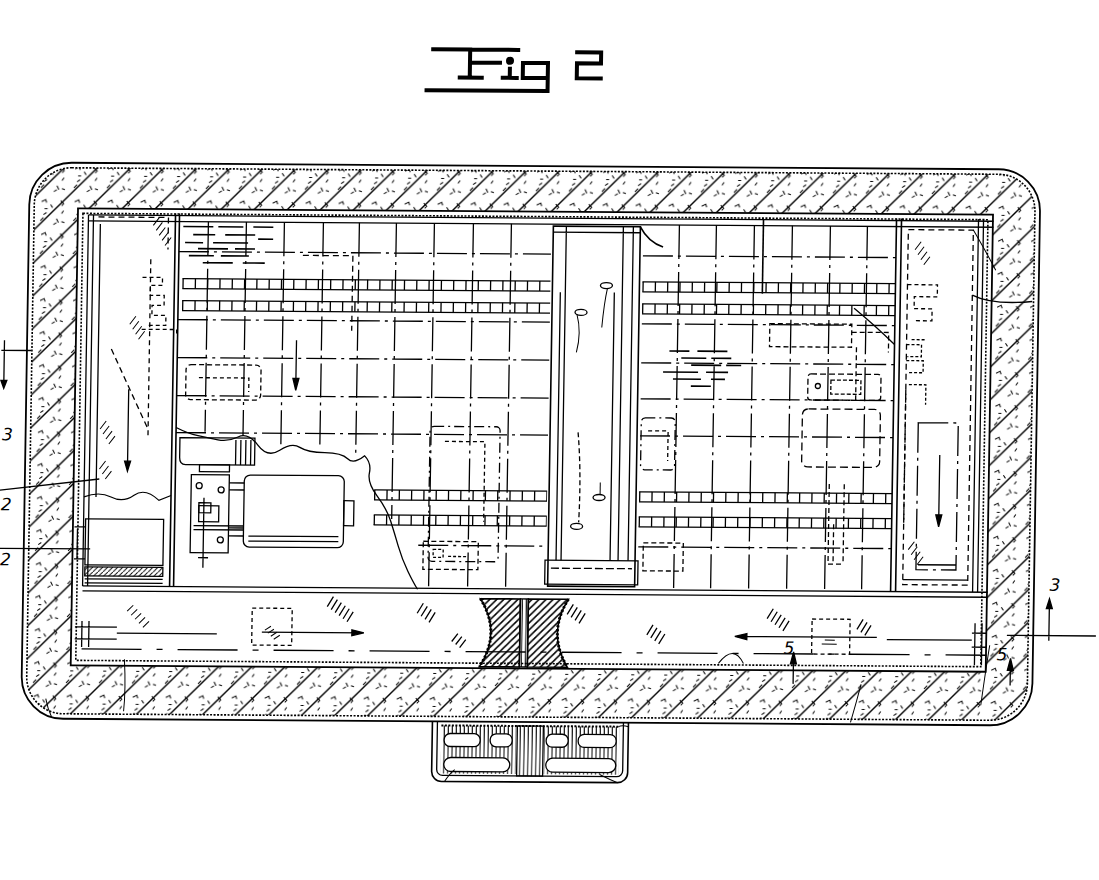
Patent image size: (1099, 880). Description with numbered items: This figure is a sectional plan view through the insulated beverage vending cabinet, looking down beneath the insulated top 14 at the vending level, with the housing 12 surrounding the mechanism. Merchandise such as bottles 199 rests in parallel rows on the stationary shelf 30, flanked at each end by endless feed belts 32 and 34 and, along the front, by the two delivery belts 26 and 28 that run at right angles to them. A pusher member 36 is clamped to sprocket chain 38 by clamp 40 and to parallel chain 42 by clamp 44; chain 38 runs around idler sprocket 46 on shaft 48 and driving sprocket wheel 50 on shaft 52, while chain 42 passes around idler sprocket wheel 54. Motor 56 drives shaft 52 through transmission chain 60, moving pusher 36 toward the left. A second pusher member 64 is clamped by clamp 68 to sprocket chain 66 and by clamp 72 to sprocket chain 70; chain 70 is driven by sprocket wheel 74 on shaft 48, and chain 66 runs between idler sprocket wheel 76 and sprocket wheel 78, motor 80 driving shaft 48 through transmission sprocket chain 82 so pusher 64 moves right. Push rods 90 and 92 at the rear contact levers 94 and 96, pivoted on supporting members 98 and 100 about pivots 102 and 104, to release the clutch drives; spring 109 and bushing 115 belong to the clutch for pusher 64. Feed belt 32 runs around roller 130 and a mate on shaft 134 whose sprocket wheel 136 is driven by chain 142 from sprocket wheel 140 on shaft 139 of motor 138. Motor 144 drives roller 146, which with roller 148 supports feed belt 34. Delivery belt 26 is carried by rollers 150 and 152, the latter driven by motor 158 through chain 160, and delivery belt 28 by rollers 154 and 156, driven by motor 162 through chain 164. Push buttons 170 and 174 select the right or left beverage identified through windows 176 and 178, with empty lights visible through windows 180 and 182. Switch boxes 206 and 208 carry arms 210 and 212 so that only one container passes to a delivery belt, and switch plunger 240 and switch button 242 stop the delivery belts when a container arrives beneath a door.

The insulated housing 12 is at (1015, 395).
The insulated top 14 is at (307, 368).
The delivery belt 26 is at (288, 662).
The delivery belt 28 is at (750, 670).
The stationary shelf 30 is at (482, 212).
The feed belt 32 is at (170, 582).
The feed belt 34 is at (1032, 259).
The pusher member 36 is at (590, 226).
The sprocket chain 38 is at (502, 313).
The clamp 40 is at (575, 354).
The sprocket chain 42 is at (520, 491).
The clamp 44 is at (576, 465).
The idler sprocket 46 is at (925, 316).
The shaft 48 is at (925, 406).
The driving sprocket wheel 50 is at (136, 314).
The shaft 52 is at (124, 403).
The idler sprocket wheel 54 is at (975, 537).
The motor 56 is at (262, 460).
The transmission chain 60 is at (215, 367).
The second pusher member 64 is at (645, 236).
The sprocket chain 66 is at (665, 284).
The clamp 68 is at (608, 315).
The sprocket chain 70 is at (665, 493).
The clamp 72 is at (593, 493).
The driving sprocket wheel 74 is at (905, 522).
The idler sprocket wheel 76 is at (148, 280).
The sprocket wheel 78 is at (930, 282).
The motor 80 is at (802, 457).
The transmission sprocket chain 82 is at (893, 354).
The push rod 90 is at (322, 217).
The push rod 92 is at (760, 217).
The lever 94 is at (300, 347).
The lever 96 is at (806, 348).
The supporting member 98 is at (178, 214).
The supporting member 100 is at (896, 217).
The pivot 102 is at (175, 340).
The pivot 104 is at (864, 317).
The spring 109 is at (922, 342).
The bushing 115 is at (922, 364).
The roller 130 is at (115, 228).
The shaft 134 is at (192, 562).
The sprocket wheel 136 is at (212, 562).
The motor 138 is at (341, 550).
The shaft 139 is at (222, 504).
The sprocket wheel 140 is at (190, 512).
The sprocket chain 142 is at (232, 530).
The motor 144 is at (830, 562).
The roller 146 is at (977, 545).
The roller 148 is at (982, 207).
The roller 150 is at (134, 714).
The roller 152 is at (462, 650).
The roller 154 is at (872, 720).
The roller 156 is at (614, 650).
The motor 158 is at (500, 437).
The sprocket chain 160 is at (482, 570).
The motor 162 is at (665, 434).
The sprocket chain 164 is at (661, 566).
The push button 170 is at (551, 752).
The push button 174 is at (506, 764).
The window 176 is at (624, 784).
The window 178 is at (449, 772).
The window 180 is at (633, 738).
The window 182 is at (440, 732).
The bottles 199 is at (855, 627).
The switch box 206 is at (987, 704).
The switch box 208 is at (58, 720).
The switch arm 210 is at (940, 642).
The switch arm 212 is at (130, 636).
The switch plunger 240 is at (567, 627).
The switch button 242 is at (487, 624).